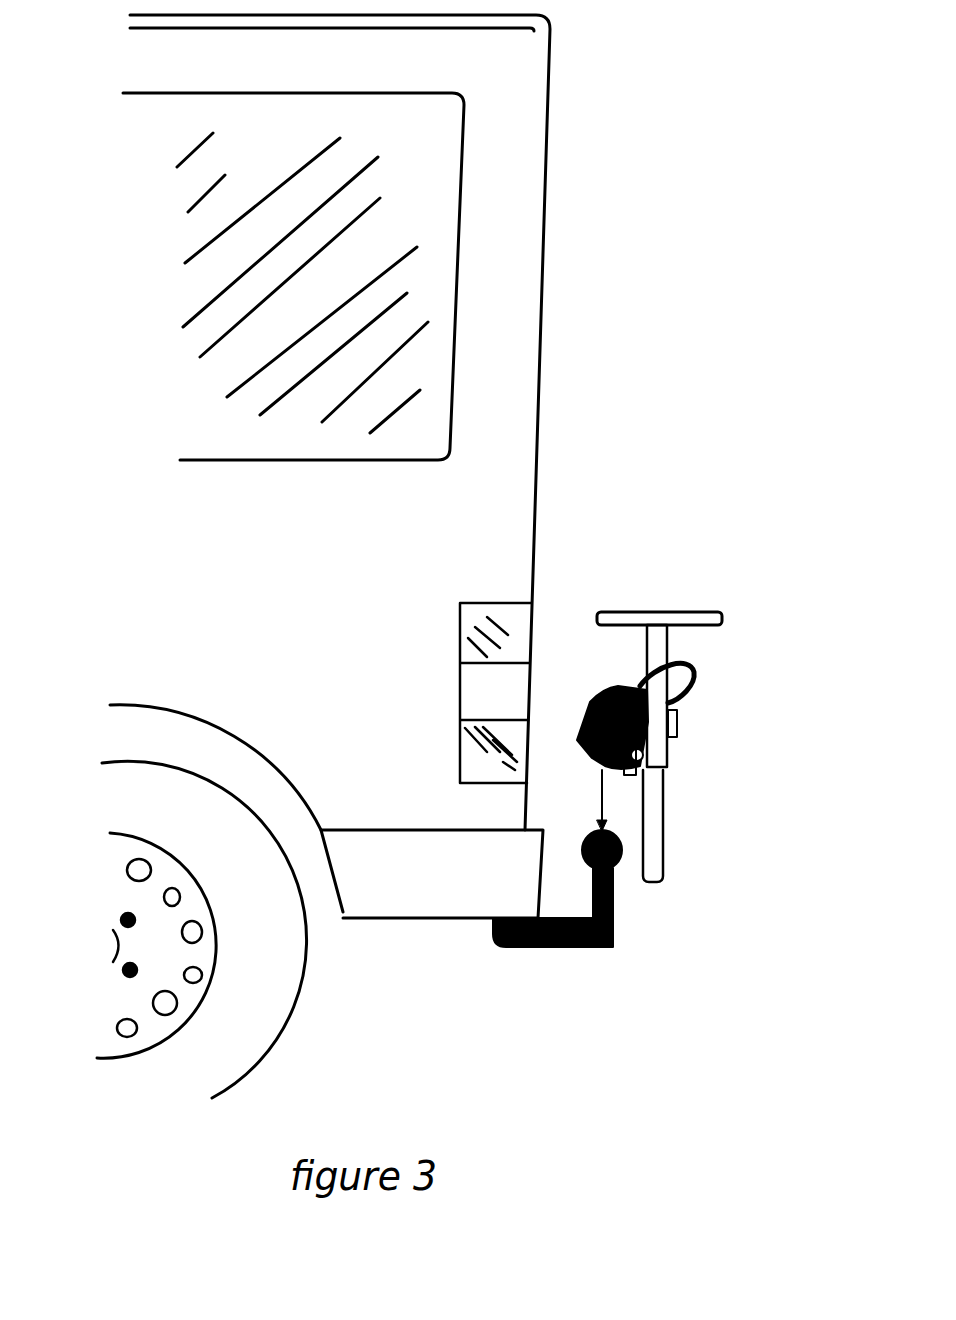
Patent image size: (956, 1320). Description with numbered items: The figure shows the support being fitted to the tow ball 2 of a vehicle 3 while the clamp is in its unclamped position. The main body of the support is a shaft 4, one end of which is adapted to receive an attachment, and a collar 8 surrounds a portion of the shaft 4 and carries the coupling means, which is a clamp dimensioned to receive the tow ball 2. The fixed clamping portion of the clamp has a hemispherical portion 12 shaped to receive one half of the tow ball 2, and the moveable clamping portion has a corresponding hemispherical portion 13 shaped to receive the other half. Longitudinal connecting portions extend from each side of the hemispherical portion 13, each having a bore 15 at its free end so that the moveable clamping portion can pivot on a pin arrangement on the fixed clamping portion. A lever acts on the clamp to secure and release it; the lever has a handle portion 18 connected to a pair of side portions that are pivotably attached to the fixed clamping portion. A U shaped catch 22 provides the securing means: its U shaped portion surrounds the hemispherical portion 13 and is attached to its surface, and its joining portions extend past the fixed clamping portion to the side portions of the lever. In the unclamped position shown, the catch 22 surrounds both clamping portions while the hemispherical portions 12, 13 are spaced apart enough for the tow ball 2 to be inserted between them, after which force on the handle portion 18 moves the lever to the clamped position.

The tow ball 2 is at (615, 870).
The vehicle 3 is at (537, 493).
The shaft 4 is at (663, 828).
The collar 8 is at (668, 767).
The hemispherical portion 12 is at (622, 757).
The hemispherical portion 13 is at (587, 727).
The bore 15 is at (680, 574).
The handle portion 18 is at (693, 670).
The U shaped catch 22 is at (593, 757).